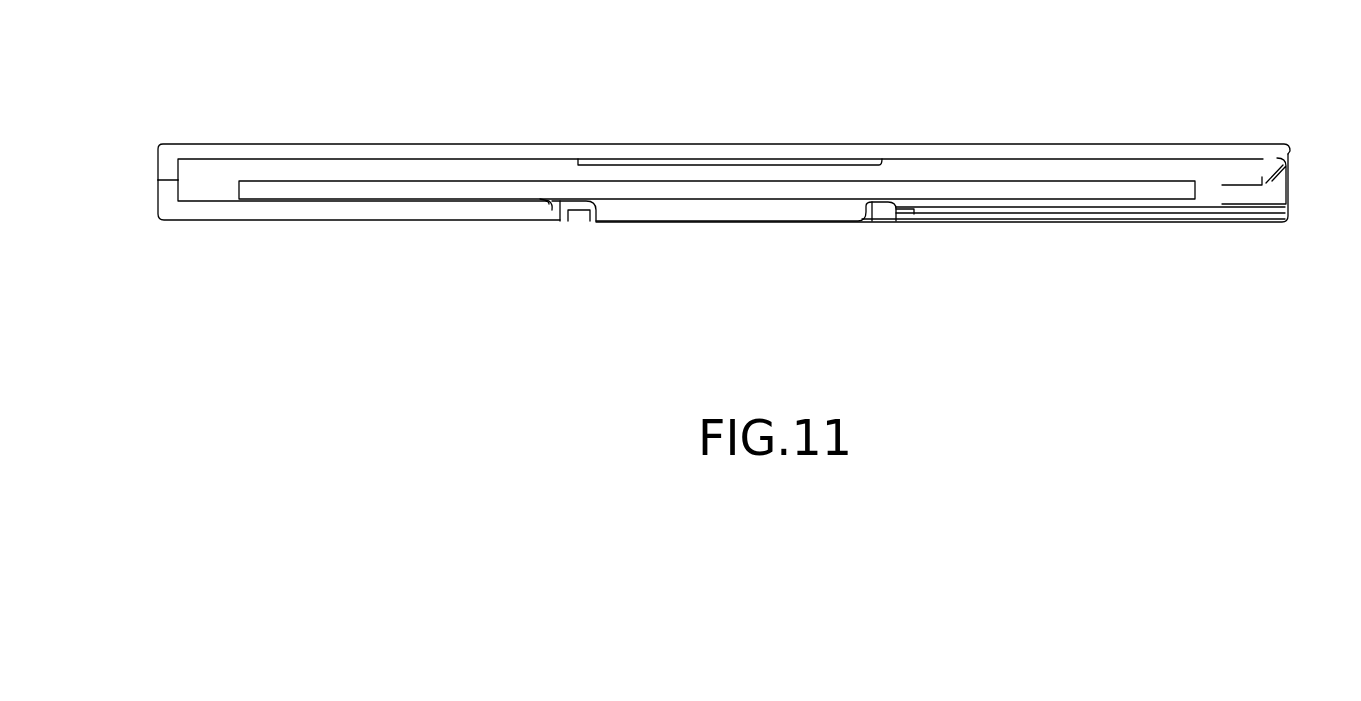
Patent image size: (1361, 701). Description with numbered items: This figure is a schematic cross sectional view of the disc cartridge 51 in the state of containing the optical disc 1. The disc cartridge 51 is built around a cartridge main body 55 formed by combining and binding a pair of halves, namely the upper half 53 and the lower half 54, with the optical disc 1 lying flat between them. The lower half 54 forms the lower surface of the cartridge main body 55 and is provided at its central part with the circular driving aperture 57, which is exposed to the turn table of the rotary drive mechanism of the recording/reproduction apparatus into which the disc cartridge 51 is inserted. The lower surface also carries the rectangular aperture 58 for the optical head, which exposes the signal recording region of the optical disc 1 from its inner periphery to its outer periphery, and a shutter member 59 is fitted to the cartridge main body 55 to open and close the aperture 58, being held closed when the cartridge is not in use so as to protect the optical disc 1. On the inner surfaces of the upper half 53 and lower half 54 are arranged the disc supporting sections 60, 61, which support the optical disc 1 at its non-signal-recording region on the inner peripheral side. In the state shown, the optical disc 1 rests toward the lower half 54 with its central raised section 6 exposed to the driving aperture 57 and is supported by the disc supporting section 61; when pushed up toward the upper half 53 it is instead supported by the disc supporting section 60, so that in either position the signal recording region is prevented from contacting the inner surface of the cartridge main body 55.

The optical disc 1 is at (1057, 185).
The raised section 6 is at (836, 210).
The disc cartridge 51 is at (1248, 145).
The upper half 53 is at (160, 147).
The lower half 54 is at (160, 200).
The cartridge main body 55 is at (103, 108).
The driving aperture 57 is at (578, 216).
The aperture for the optical head 58 is at (1132, 213).
The shutter member 59 is at (1292, 198).
The disc supporting section 60 is at (860, 160).
The disc supporting section 61 is at (549, 205).